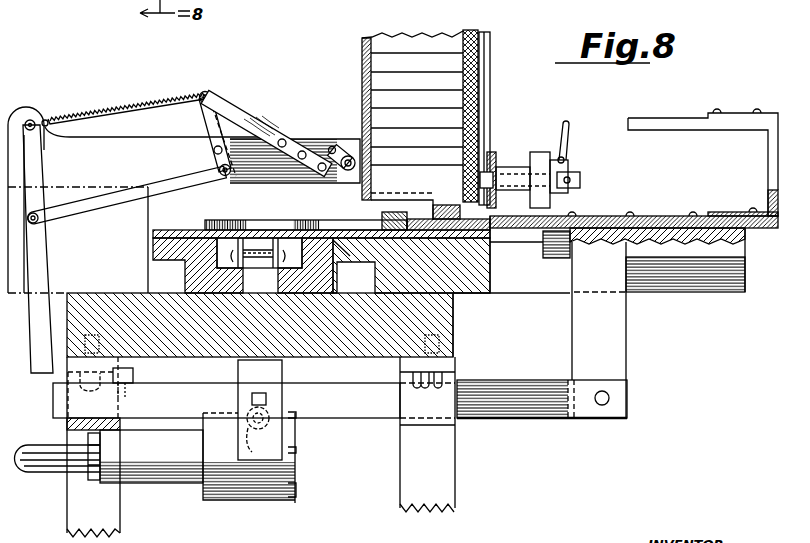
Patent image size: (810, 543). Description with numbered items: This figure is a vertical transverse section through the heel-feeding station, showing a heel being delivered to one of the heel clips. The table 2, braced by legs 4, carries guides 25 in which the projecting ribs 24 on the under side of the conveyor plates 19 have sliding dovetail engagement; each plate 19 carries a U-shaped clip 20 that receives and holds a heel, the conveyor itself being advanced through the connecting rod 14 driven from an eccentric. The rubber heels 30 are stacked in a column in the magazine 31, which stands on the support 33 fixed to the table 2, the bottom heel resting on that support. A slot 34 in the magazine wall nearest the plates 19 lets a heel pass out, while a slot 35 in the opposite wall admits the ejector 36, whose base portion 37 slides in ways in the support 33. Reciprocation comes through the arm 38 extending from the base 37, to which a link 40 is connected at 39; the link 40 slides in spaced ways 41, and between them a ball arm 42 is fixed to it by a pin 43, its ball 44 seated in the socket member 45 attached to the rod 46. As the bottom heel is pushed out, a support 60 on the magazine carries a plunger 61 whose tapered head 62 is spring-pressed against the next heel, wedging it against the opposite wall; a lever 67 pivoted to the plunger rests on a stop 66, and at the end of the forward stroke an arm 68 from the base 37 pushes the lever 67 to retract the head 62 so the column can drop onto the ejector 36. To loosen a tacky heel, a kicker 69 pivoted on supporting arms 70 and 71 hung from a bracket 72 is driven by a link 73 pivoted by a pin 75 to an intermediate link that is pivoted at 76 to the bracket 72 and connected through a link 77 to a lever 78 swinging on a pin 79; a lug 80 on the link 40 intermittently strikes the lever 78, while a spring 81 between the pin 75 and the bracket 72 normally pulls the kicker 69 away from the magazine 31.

The table 2 is at (457, 323).
The legs 4 is at (455, 471).
The connecting rod 14 is at (205, 122).
The plates 19 is at (172, 231).
The U-shaped clip 20 is at (248, 223).
The projecting ribs 24 is at (343, 257).
The guides 25 is at (183, 271).
The rubber heels 30 is at (427, 43).
The magazine 31 is at (490, 55).
The support 33 is at (483, 295).
The slot 34 is at (378, 203).
The slot 35 is at (496, 218).
The ejector 36 is at (516, 232).
The base portion 37 is at (685, 281).
The arm 38 is at (627, 355).
The connection 39 is at (542, 414).
The link 40 is at (545, 420).
The ways 41 is at (67, 424).
The ball arm 42 is at (297, 430).
The pin 43 is at (268, 393).
The ball 44 is at (300, 445).
The socket member 45 is at (240, 498).
The rod 46 is at (35, 471).
The support 60 is at (497, 163).
The plunger 61 is at (515, 175).
The head 62 is at (462, 190).
The stop 66 is at (560, 155).
The lever 67 is at (568, 147).
The arm 68 is at (668, 118).
The kicker 69 is at (350, 158).
The supporting arm 70 is at (315, 151).
The supporting arm 71 is at (334, 134).
The bracket 72 is at (88, 147).
The link 73 is at (241, 120).
The pin 75 is at (205, 91).
The pivot 76 is at (214, 150).
The link 77 is at (116, 192).
The lever 78 is at (45, 262).
The pin 79 is at (32, 120).
The lug 80 is at (134, 376).
The spring 81 is at (143, 102).